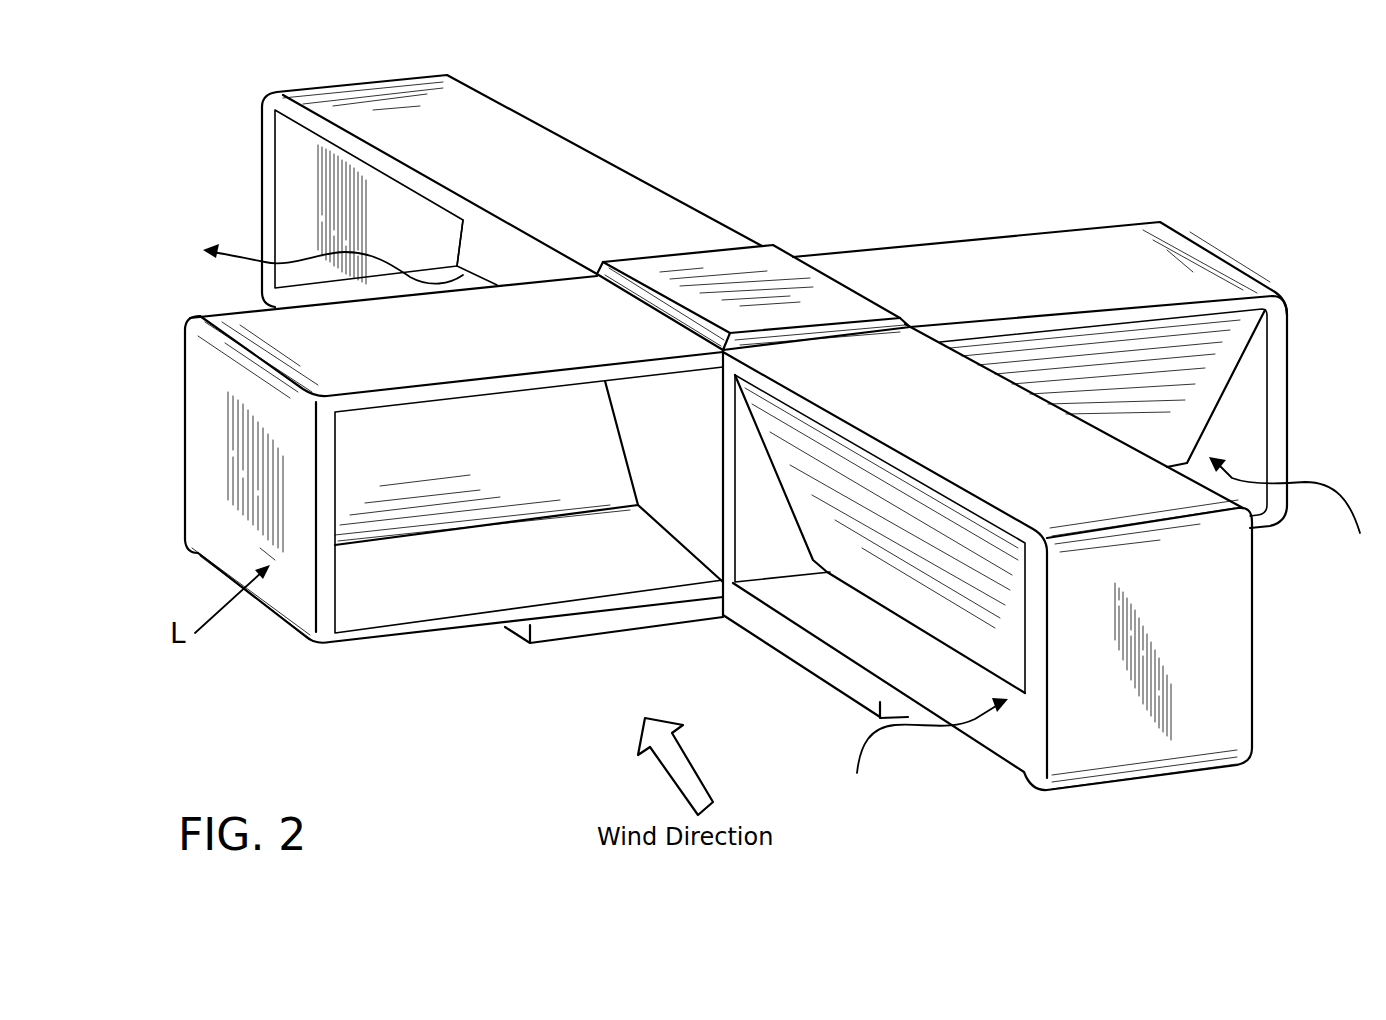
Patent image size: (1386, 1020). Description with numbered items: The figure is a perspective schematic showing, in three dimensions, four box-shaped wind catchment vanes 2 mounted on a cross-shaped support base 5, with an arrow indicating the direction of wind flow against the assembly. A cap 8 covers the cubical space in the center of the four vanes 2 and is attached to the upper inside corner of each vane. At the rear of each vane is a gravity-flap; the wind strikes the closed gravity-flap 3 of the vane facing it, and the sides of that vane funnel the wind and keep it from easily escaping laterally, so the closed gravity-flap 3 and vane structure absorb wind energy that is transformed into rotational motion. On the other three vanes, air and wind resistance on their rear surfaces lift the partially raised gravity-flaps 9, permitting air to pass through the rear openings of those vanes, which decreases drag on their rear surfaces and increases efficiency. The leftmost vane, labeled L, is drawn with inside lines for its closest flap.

The wind catchment vane 2 is at (551, 195).
The gravity-flap 3 is at (473, 460).
The cross-shaped support base 5 is at (745, 629).
The cap 8 is at (756, 320).
The partially raised gravity-flap 9 is at (507, 275).